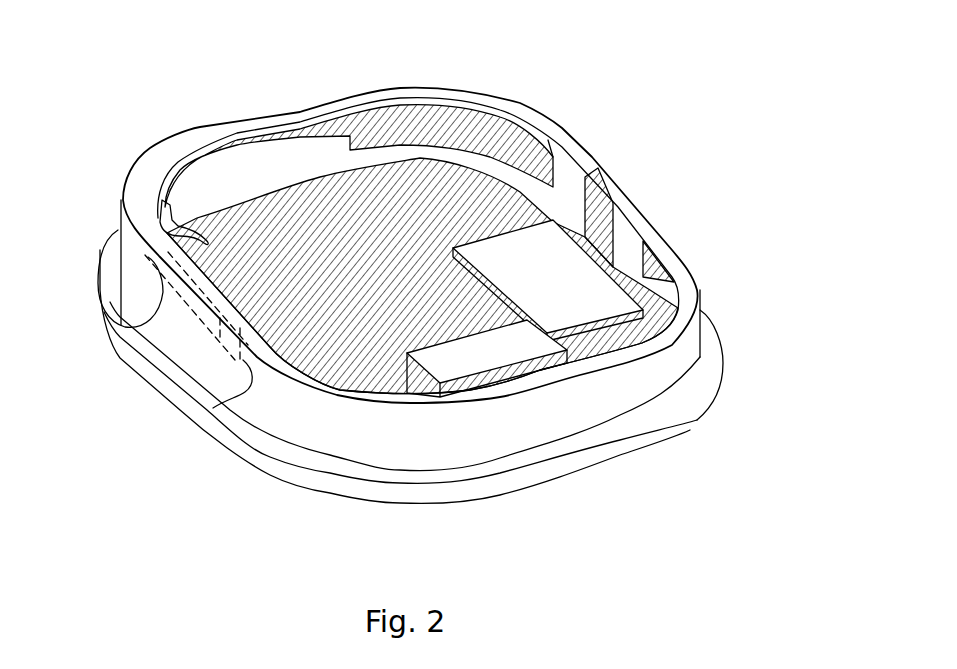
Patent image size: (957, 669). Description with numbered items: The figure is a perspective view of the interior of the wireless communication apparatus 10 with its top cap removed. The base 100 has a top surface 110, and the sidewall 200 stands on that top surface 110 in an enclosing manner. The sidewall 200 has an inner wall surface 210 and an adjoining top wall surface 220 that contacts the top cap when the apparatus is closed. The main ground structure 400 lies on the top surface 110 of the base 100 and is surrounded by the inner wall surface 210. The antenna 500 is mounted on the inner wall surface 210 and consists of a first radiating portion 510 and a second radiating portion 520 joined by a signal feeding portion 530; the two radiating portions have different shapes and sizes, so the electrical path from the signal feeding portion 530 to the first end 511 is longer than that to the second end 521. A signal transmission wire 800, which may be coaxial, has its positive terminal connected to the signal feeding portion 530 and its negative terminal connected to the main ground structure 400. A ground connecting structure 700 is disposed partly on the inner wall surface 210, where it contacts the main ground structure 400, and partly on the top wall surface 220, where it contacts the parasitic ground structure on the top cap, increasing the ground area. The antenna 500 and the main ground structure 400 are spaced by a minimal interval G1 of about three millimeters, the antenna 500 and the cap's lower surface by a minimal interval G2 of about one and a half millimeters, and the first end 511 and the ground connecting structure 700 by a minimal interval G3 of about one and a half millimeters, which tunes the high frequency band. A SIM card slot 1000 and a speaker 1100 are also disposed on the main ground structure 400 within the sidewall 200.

The wireless communication apparatus 10 is at (714, 60).
The base 100 is at (448, 391).
The top surface 110 is at (690, 390).
The sidewall 200 is at (459, 245).
The inner wall surface 210 is at (640, 222).
The top wall surface 220 is at (687, 273).
The main ground structure 400 is at (345, 190).
The antenna 500 is at (265, 95).
The first radiating portion 510 is at (240, 145).
The first end 511 is at (558, 145).
The second radiating portion 520 is at (118, 200).
The second end 521 is at (248, 360).
The signal feeding portion 530 is at (165, 195).
The ground connecting structure 700 is at (621, 178).
The signal transmission wire 800 is at (130, 327).
The SIM card slot 1000 is at (624, 330).
The speaker 1100 is at (517, 380).
The minimal interval G1 is at (200, 188).
The minimal interval G2 is at (413, 122).
The minimal interval G3 is at (580, 196).